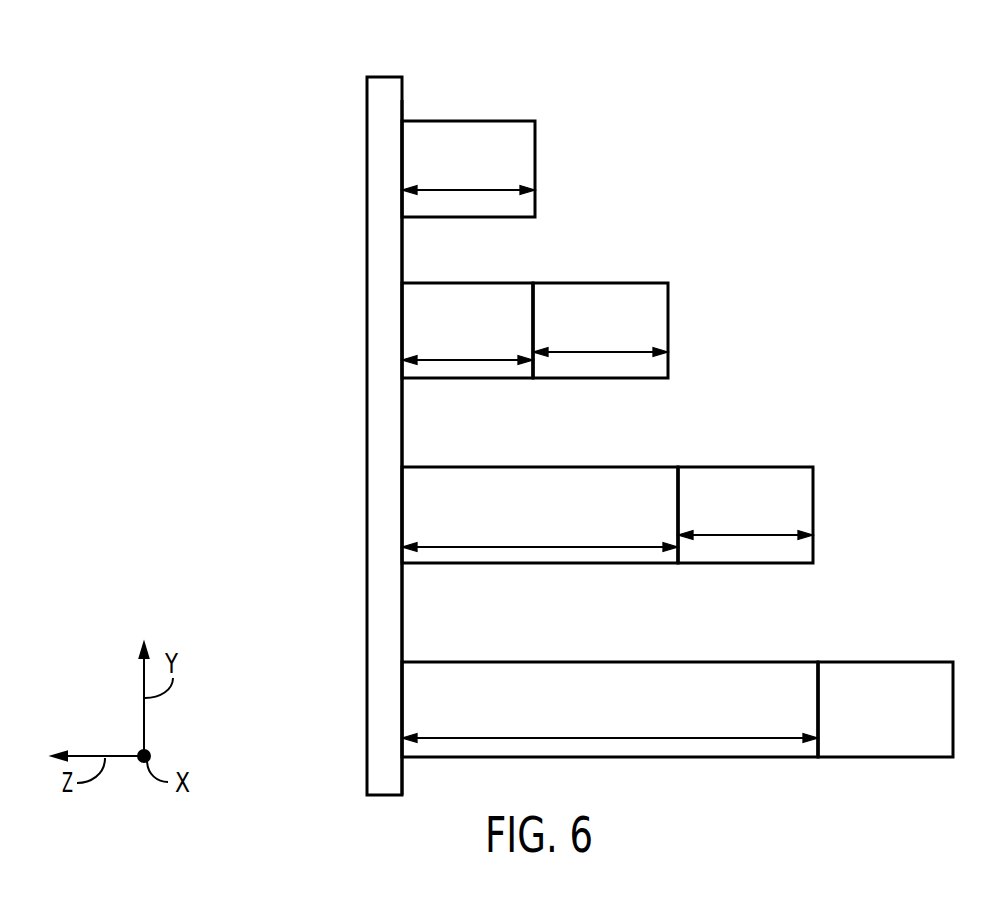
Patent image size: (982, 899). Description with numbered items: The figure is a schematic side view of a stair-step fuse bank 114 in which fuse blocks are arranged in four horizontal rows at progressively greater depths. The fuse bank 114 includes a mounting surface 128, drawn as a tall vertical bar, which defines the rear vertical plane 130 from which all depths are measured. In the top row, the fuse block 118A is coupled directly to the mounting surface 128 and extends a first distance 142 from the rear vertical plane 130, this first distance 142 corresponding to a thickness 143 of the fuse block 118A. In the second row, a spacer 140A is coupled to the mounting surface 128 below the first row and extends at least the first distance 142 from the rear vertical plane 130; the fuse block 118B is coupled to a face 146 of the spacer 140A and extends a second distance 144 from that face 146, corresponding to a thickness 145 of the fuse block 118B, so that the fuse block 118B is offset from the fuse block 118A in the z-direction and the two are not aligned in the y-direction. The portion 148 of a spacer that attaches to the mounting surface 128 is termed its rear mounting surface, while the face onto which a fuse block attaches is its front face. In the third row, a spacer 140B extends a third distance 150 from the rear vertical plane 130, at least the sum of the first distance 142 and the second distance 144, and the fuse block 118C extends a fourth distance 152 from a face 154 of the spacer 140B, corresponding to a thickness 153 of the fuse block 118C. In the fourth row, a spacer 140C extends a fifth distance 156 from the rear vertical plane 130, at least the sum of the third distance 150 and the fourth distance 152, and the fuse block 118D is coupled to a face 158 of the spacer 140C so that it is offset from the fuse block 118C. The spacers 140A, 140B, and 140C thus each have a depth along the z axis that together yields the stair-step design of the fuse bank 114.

The stair-step fuse bank 114 is at (612, 68).
The mounting surface 128 is at (436, 402).
The rear vertical plane 130 is at (402, 98).
The rear mounting surface portion 148 is at (402, 330).
The fuse block 118A is at (483, 152).
The fuse block 118B is at (628, 317).
The fuse block 118C is at (768, 503).
The fuse block 118D is at (912, 695).
The spacer 140A is at (485, 317).
The spacer 140B is at (570, 503).
The spacer 140C is at (640, 695).
The first distance 142 is at (502, 301).
The thickness of the fuse block 143 is at (467, 191).
The second distance 144 is at (635, 381).
The thickness of the fuse block 145 is at (600, 353).
The face of the spacer 146 is at (533, 300).
The third distance 150 is at (590, 546).
The fourth distance 152 is at (779, 565).
The thickness of the fuse block 153 is at (745, 536).
The face of the spacer 154 is at (678, 497).
The fifth distance 156 is at (657, 737).
The face of the spacer 158 is at (818, 690).